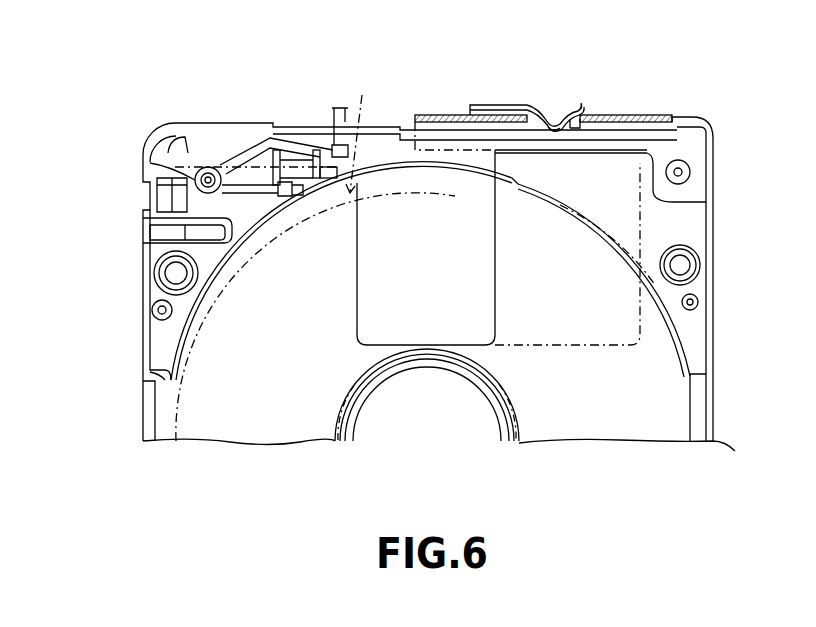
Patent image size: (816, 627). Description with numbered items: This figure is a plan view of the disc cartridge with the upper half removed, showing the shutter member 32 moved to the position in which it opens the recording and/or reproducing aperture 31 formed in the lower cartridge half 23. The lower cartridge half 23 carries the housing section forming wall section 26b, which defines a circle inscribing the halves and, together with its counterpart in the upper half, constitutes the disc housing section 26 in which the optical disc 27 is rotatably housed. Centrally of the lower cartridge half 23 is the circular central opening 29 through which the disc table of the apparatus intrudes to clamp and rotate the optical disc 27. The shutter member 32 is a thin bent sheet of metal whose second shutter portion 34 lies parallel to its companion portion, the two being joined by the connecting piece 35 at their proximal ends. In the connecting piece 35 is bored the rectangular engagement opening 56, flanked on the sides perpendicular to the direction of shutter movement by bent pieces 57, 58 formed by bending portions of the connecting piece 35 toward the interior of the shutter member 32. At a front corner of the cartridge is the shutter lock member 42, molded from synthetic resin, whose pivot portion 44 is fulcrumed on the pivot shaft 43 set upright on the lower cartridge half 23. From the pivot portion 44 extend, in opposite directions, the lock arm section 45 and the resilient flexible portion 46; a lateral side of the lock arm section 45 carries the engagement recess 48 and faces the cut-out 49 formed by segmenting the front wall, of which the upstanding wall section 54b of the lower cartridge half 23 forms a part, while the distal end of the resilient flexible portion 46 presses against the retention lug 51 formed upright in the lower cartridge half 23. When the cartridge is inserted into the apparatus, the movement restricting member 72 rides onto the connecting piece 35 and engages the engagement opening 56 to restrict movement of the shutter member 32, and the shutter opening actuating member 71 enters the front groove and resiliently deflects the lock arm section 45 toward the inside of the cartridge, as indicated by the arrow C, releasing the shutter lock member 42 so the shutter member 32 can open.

The lower cartridge half 23 is at (716, 437).
The disc housing section 26 is at (168, 380).
The housing section forming wall section 26b is at (191, 312).
The optical disc 27 is at (276, 425).
The central opening 29 is at (354, 432).
The recording and/or reproducing aperture 31 is at (357, 304).
The shutter member 32 is at (663, 117).
The second shutter portion 34 is at (573, 339).
The connecting piece 35 is at (497, 108).
The shutter lock member 42 is at (203, 166).
The pivot shaft 43 is at (150, 155).
The pivot portion 44 is at (223, 193).
The lock arm section 45 is at (262, 150).
The resilient flexible portion 46 is at (258, 190).
The engagement recess 48 is at (297, 158).
The cut-out 49 is at (216, 167).
The retention lug 51 is at (288, 201).
The upstanding wall section 54b is at (572, 158).
The engagement opening 56 is at (568, 119).
The bent piece 57 is at (537, 117).
The bent piece 58 is at (598, 117).
The shutter opening actuating member 71 is at (360, 110).
The movement restricting member 72 is at (551, 124).